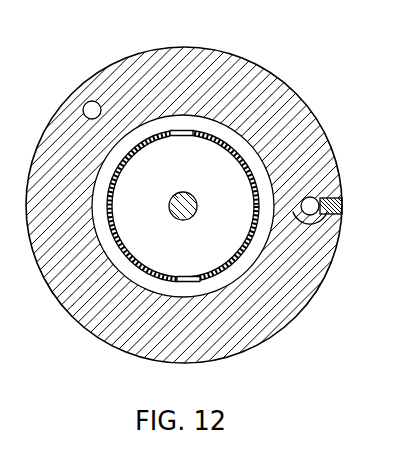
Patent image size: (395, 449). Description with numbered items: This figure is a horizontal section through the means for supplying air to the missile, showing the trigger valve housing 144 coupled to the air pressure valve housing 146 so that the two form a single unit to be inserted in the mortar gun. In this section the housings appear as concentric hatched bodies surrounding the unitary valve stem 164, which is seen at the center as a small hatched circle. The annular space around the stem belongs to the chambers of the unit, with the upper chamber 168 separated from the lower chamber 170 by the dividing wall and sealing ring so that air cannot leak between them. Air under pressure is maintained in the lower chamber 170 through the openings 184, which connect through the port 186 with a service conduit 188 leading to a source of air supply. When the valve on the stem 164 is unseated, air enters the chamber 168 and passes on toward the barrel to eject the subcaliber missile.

The trigger valve housing 144 is at (274, 307).
The air pressure valve housing 146 is at (268, 68).
The valve stem 164 is at (189, 196).
The upper chamber 168 is at (222, 280).
The lower chamber 170 is at (152, 153).
The openings 184 is at (188, 127).
The port 186 is at (322, 216).
The service conduit 188 is at (325, 195).